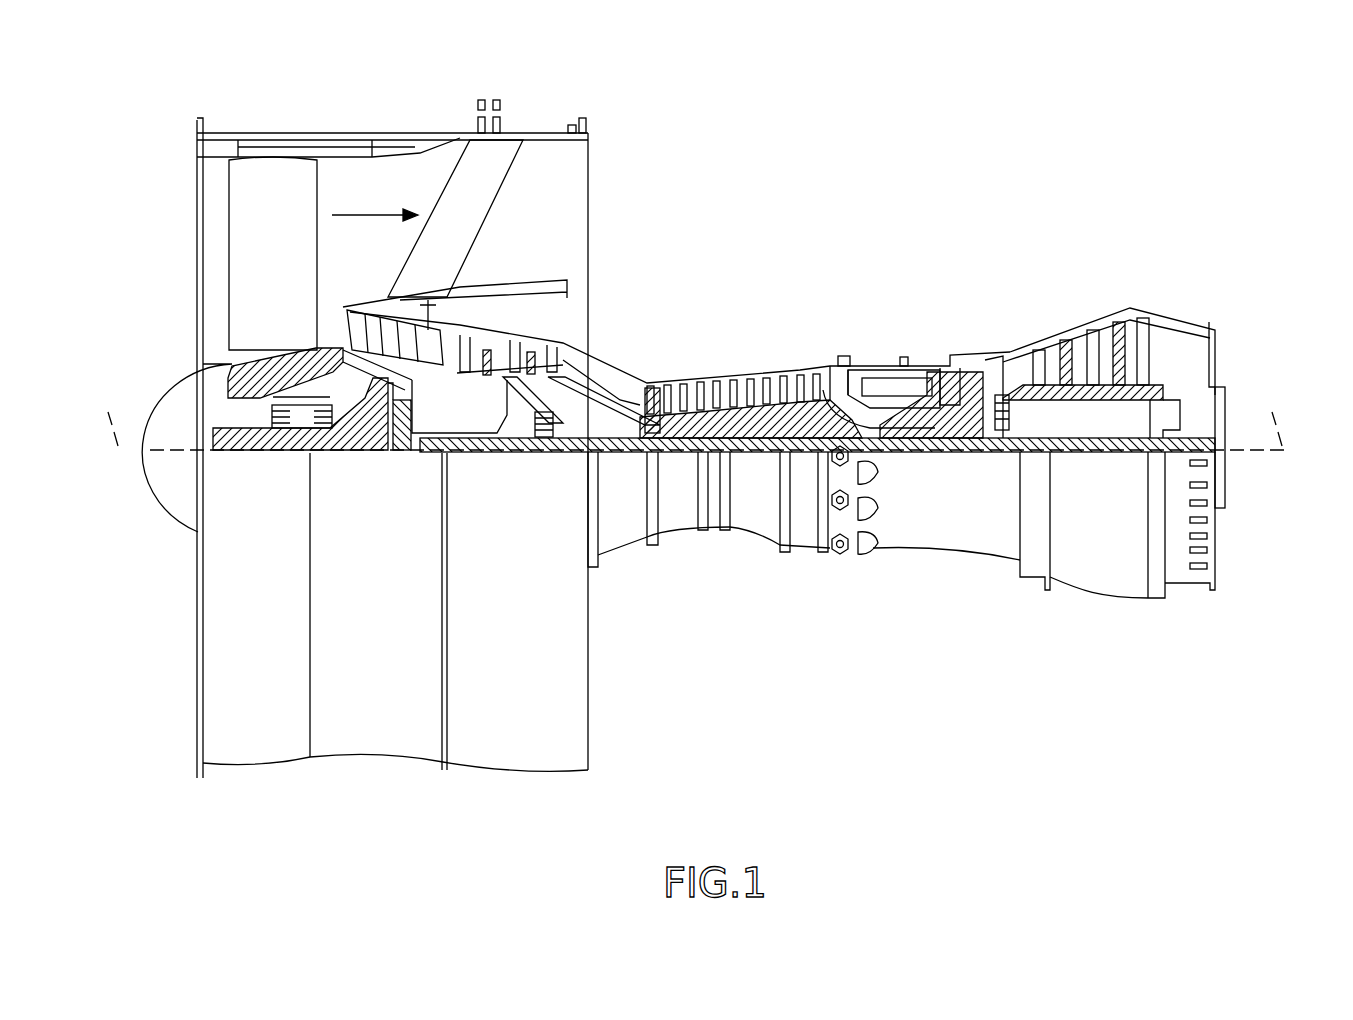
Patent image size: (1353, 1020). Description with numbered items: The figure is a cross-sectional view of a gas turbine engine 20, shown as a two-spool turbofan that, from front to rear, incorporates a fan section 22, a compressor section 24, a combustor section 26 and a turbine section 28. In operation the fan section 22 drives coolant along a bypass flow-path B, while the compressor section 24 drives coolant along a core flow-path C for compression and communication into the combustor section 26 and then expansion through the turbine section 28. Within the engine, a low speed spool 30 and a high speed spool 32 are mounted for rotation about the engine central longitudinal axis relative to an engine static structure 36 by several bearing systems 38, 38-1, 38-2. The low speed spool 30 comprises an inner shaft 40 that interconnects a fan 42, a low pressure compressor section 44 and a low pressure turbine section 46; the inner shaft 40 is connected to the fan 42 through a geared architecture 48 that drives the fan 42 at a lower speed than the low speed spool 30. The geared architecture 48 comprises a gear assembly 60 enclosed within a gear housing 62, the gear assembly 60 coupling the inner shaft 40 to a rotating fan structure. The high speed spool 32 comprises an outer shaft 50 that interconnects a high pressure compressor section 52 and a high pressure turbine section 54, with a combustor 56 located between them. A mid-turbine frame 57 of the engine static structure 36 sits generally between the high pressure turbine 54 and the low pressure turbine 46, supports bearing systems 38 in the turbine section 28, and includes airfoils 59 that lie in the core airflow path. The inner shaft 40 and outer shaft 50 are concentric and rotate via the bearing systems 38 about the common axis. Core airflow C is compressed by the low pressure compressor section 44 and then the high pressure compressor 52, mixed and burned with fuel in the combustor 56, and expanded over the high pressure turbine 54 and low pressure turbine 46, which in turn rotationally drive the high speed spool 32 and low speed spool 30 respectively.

The gas turbine engine 20 is at (932, 165).
The fan section 22 is at (190, 113).
The compressor section 24 is at (447, 245).
The combustor section 26 is at (827, 245).
The turbine section 28 is at (1162, 245).
The low speed spool 30 is at (760, 470).
The high speed spool 32 is at (800, 415).
The engine static structure 36 is at (370, 745).
The bearing system 38 is at (984, 440).
The bearing system 38-1 is at (283, 428).
The bearing system 38-2 is at (540, 432).
The inner shaft 40 is at (612, 453).
The fan 42 is at (256, 262).
The low pressure compressor section 44 is at (520, 350).
The low pressure turbine section 46 is at (1085, 333).
The geared architecture 48 is at (402, 468).
The outer shaft 50 is at (880, 446).
The high pressure compressor section 52 is at (745, 412).
The high pressure turbine section 54 is at (953, 366).
The combustor 56 is at (877, 385).
The mid-turbine frame 57 is at (995, 363).
The airfoils 59 is at (1000, 373).
The gear assembly 60 is at (418, 432).
The gear housing 62 is at (412, 398).
The bypass flow-path B is at (358, 218).
The core flow-path C is at (338, 330).